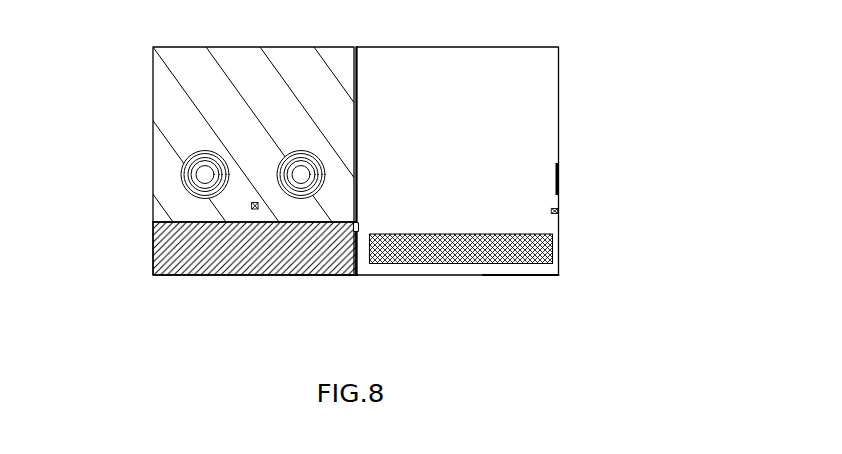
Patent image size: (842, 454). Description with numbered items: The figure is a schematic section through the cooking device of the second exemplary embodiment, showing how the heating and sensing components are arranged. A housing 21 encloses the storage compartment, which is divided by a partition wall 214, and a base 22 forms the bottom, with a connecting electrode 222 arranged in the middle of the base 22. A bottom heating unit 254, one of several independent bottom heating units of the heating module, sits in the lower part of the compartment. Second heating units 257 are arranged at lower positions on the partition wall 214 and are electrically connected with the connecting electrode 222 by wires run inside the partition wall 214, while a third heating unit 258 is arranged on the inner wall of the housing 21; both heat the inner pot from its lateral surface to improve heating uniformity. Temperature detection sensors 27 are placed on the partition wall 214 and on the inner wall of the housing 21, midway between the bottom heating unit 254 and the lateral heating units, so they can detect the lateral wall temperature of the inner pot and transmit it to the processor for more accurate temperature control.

The housing 21 is at (561, 93).
The base 22 is at (223, 253).
The connecting electrode 222 is at (334, 276).
The partition wall 214 is at (175, 120).
The bottom heating unit 254 is at (513, 265).
The second heating unit 257 is at (181, 175).
The third heating unit 258 is at (560, 186).
The temperature detection sensor 27 is at (251, 206).